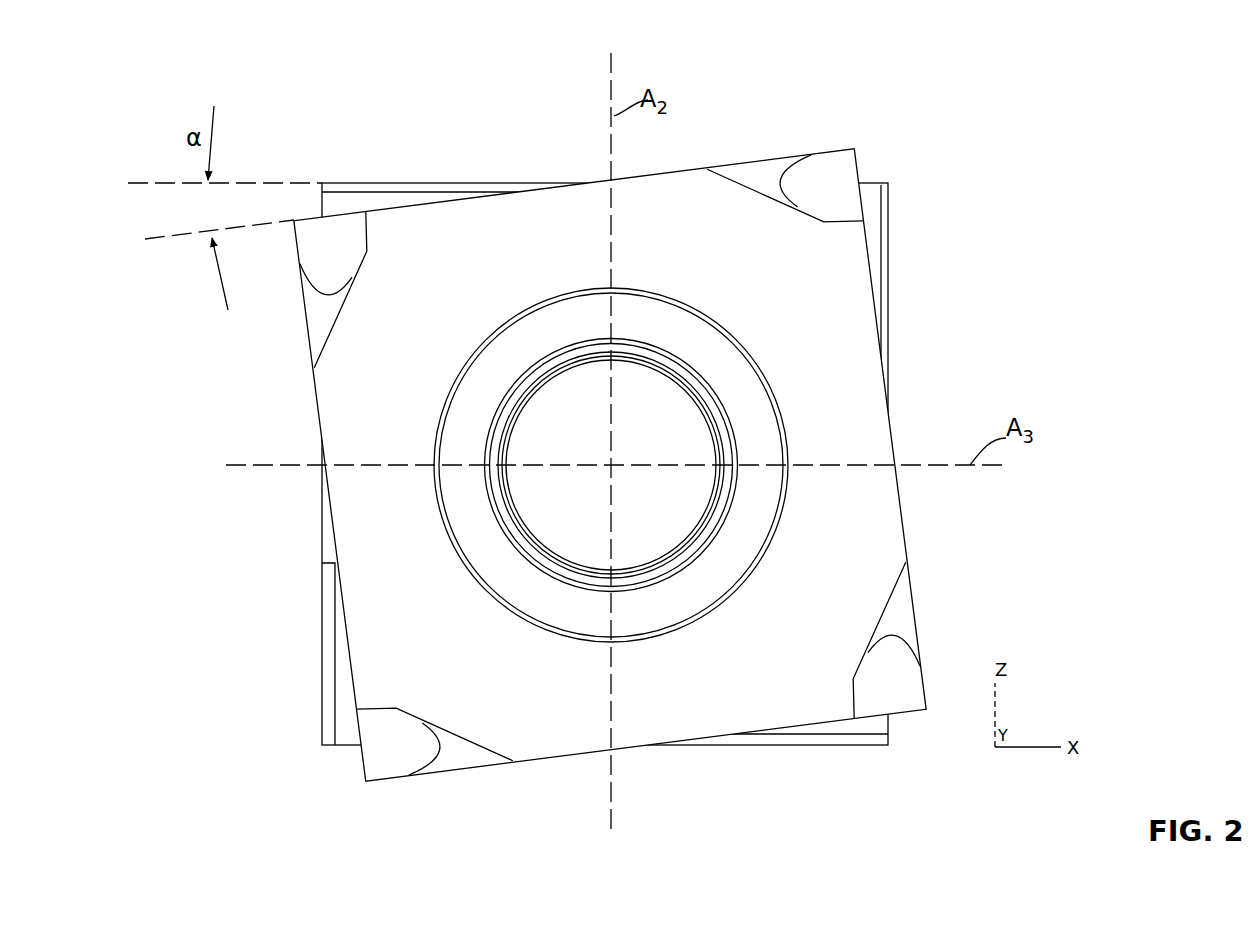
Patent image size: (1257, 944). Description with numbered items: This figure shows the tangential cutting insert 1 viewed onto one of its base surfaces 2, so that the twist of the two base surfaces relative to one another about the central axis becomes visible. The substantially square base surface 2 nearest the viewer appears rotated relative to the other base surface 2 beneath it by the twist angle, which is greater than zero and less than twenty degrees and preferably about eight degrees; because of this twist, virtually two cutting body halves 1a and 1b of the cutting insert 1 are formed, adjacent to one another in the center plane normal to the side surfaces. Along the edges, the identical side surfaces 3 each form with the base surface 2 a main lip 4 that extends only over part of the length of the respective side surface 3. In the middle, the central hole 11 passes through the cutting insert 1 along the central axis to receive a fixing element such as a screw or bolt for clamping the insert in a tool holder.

The tangential cutting insert 1 is at (1000, 220).
The cutting body half 1a is at (881, 185).
The cutting body half 1b is at (760, 176).
The base surface 2 is at (628, 426).
The side surface 3 is at (384, 200).
The main lip 4 is at (321, 208).
The central hole 11 is at (563, 518).